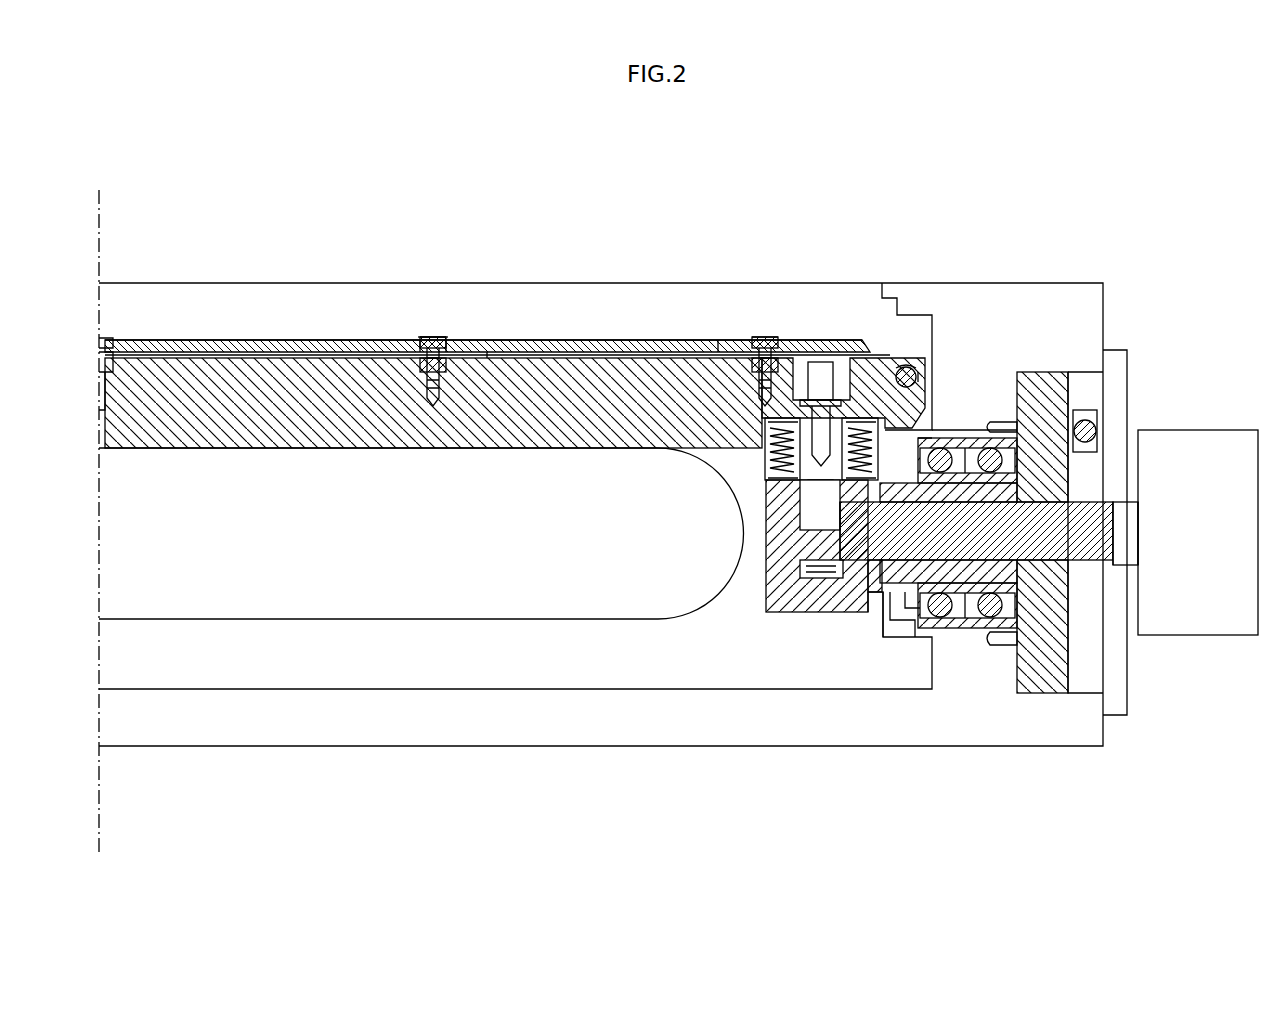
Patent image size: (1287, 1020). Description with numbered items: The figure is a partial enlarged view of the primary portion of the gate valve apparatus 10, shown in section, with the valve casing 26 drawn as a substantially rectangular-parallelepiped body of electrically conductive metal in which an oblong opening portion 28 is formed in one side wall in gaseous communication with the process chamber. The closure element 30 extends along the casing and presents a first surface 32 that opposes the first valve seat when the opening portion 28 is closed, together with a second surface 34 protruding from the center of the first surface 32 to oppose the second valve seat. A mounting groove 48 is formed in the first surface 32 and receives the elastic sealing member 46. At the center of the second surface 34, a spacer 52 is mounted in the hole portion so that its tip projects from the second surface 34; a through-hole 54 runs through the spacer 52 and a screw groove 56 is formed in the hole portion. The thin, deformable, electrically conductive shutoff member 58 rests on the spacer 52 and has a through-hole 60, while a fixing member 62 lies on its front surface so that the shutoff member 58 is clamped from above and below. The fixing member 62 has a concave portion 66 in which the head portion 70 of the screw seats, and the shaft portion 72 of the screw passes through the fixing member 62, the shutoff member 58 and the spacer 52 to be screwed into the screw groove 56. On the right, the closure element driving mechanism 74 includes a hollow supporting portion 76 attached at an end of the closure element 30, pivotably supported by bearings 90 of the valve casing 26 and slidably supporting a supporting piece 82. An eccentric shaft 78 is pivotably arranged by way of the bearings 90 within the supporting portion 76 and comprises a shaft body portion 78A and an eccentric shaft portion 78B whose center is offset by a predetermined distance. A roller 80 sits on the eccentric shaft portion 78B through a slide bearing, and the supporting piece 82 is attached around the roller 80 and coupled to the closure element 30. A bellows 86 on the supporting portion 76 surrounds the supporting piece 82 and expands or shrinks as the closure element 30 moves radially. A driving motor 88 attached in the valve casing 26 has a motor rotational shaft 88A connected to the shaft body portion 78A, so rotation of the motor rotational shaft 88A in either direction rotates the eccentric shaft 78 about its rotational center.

The gate valve apparatus 10 is at (343, 280).
The valve casing 26 is at (133, 718).
The opening portion 28 is at (143, 619).
The closure element 30 is at (469, 449).
The first surface 32 is at (922, 352).
The second surface 34 is at (625, 344).
The sealing member 46 is at (914, 366).
The mounting groove 48 is at (910, 372).
The spacer 52 is at (776, 340).
The through-hole 54 is at (432, 386).
The screw groove 56 is at (434, 408).
The shutoff member 58 is at (888, 305).
The through-hole 60 is at (447, 340).
The fixing member 62 is at (560, 340).
The concave portion 66 is at (420, 340).
The head portion 70 is at (433, 337).
The shaft portion 72 is at (487, 352).
The closure element driving mechanism 74 is at (866, 602).
The supporting portion 76 is at (779, 613).
The eccentric shaft 78 is at (1116, 492).
The shaft body portion 78A is at (1118, 498).
The eccentric shaft portion 78B is at (796, 549).
The roller 80 is at (800, 573).
The supporting piece 82 is at (812, 470).
The bellows 86 is at (768, 446).
The driving motor 88 is at (1228, 636).
The motor rotational shaft 88A is at (1108, 540).
The bearings 90 is at (968, 440).